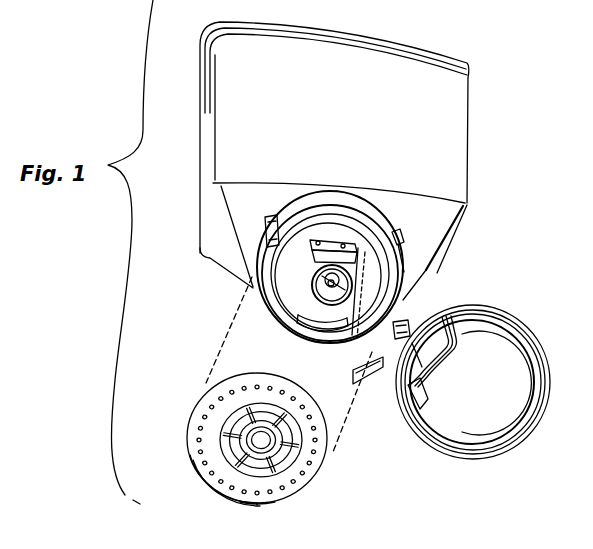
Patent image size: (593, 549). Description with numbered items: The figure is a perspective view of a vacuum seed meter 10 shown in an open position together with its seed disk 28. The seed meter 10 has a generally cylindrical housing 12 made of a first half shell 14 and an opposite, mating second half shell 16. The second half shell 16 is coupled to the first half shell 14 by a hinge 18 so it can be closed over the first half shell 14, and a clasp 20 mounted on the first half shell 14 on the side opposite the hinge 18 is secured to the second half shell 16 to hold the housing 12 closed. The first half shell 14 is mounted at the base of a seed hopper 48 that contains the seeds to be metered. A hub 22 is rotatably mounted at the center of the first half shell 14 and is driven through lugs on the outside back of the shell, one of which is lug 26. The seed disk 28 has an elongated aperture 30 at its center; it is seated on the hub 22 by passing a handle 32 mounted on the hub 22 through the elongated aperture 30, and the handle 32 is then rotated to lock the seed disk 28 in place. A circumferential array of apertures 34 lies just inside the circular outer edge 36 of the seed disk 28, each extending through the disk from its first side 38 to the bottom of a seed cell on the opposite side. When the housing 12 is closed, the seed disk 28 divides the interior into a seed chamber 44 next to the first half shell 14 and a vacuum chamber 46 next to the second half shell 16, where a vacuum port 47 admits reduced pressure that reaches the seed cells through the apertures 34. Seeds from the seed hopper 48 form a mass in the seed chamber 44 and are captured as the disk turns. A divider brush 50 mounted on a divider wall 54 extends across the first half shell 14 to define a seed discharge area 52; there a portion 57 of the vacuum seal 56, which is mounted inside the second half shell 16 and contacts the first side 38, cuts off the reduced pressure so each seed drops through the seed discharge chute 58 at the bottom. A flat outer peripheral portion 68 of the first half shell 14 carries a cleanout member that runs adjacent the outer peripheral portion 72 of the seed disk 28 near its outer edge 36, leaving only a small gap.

The vacuum seed meter 10 is at (385, 446).
The housing 12 is at (431, 272).
The first half shell 14 is at (408, 267).
The second half shell 16 is at (540, 431).
The hinge 18 is at (412, 317).
The clasp 20 is at (272, 220).
The hub 22 is at (318, 290).
The lug 26 is at (292, 526).
The seed disk 28 is at (311, 479).
The elongated aperture 30 is at (250, 453).
The handle 32 is at (320, 278).
The apertures 34 is at (208, 473).
The circular outer edge 36 is at (270, 507).
The first side 38 is at (192, 445).
The seed chamber 44 is at (315, 288).
The vacuum chamber 46 is at (497, 360).
The vacuum port 47 is at (430, 395).
The seed hopper 48 is at (348, 110).
The divider brush 50 is at (379, 202).
The seed discharge area 52 is at (346, 346).
The divider wall 54 is at (398, 242).
The vacuum seal 56 is at (538, 345).
The portion of the vacuum seal 57 is at (438, 360).
The seed discharge chute 58 is at (366, 381).
The outer peripheral portion of the first half shell 68 is at (297, 347).
The outer peripheral portion of the seed disk 72 is at (192, 408).